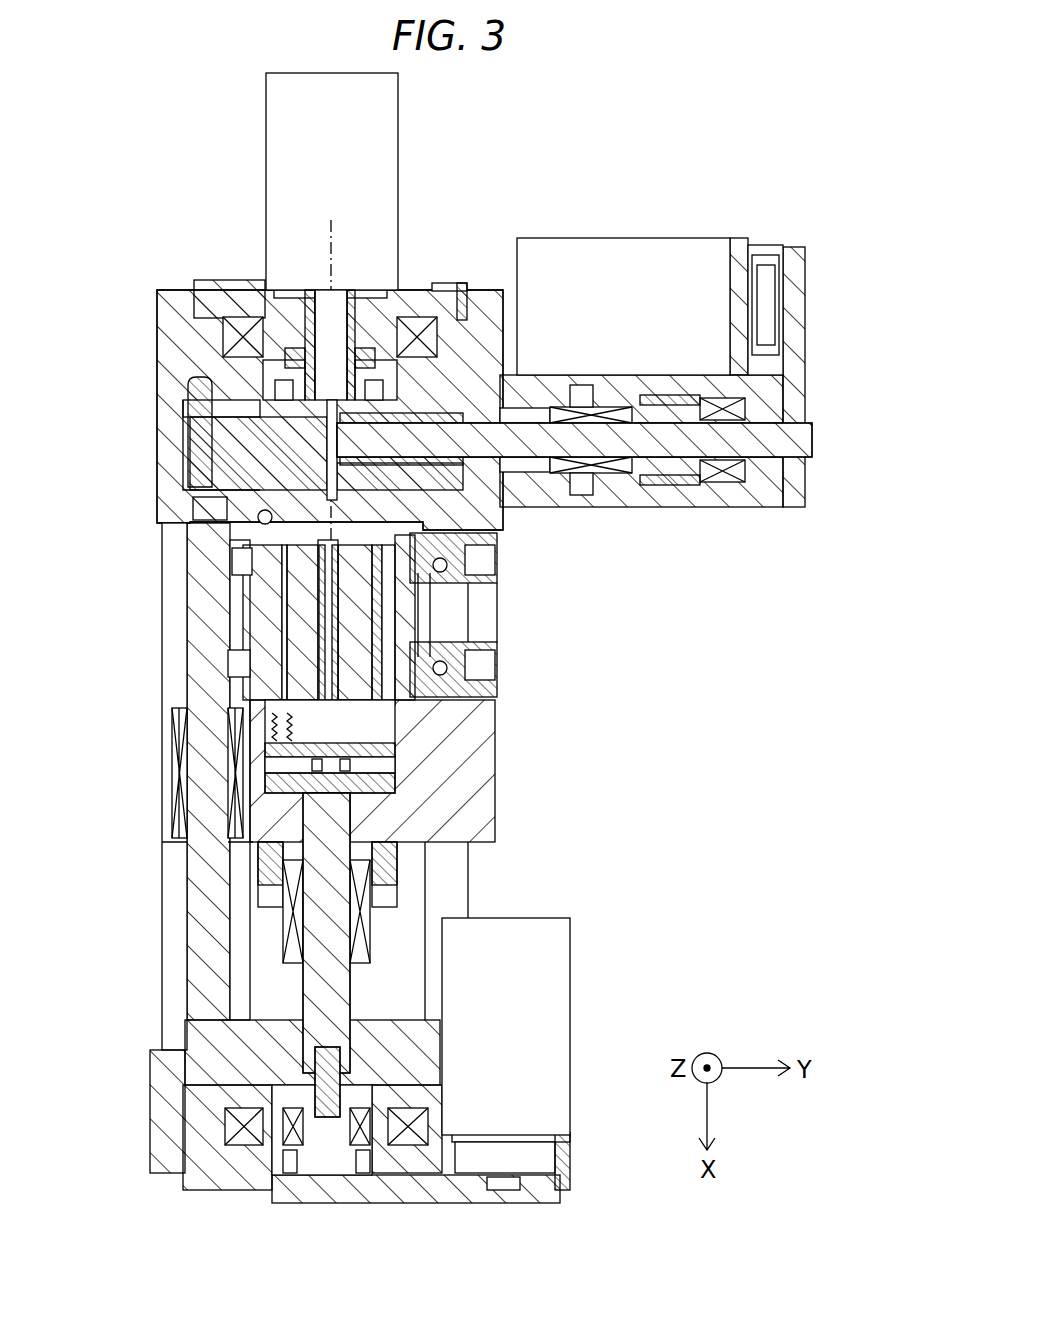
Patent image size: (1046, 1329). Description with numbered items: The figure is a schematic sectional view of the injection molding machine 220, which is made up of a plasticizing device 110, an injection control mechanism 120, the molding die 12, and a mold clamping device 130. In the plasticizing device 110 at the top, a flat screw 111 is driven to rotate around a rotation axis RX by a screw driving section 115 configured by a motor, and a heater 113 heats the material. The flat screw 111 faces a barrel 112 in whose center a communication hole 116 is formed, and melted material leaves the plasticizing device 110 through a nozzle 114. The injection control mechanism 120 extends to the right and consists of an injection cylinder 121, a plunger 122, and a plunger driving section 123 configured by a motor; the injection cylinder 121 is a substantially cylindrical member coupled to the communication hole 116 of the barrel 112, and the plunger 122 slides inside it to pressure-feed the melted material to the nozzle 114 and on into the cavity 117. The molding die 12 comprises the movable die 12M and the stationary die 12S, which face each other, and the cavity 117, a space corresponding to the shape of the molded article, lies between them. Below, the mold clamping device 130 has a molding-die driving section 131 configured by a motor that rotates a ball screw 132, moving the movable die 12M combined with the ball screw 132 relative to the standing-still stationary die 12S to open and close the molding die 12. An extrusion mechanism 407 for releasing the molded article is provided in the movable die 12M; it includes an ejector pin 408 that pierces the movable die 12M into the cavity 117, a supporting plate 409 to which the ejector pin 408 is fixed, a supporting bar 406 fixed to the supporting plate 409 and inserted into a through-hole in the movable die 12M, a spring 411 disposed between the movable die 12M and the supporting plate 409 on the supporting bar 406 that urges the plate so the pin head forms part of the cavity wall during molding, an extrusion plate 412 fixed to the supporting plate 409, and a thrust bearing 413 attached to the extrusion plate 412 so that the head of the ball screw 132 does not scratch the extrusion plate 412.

The plasticizing device 110 is at (468, 196).
The flat screw 111 is at (200, 368).
The barrel 112 is at (260, 452).
The heater 113 is at (187, 427).
The nozzle 114 is at (262, 557).
The screw driving section 115 is at (398, 130).
The communication hole 116 is at (232, 478).
The cavity 117 is at (325, 613).
The rotation axis RX is at (331, 260).
The injection control mechanism 120 is at (757, 528).
The injection cylinder 121 is at (375, 447).
The plunger 122 is at (653, 447).
The plunger driving section 123 is at (627, 248).
The injection molding machine 220 is at (725, 148).
The molding die 12 is at (575, 582).
The stationary die 12S is at (410, 588).
The movable die 12M is at (408, 635).
The supporting bar 406 is at (280, 680).
The extrusion mechanism 407 is at (532, 755).
The ejector pin 408 is at (395, 737).
The supporting plate 409 is at (262, 750).
The spring 411 is at (235, 730).
The extrusion plate 412 is at (262, 788).
The thrust bearing 413 is at (262, 805).
The mold clamping device 130 is at (534, 905).
The molding-die driving section 131 is at (570, 1022).
The ball screw 132 is at (325, 975).